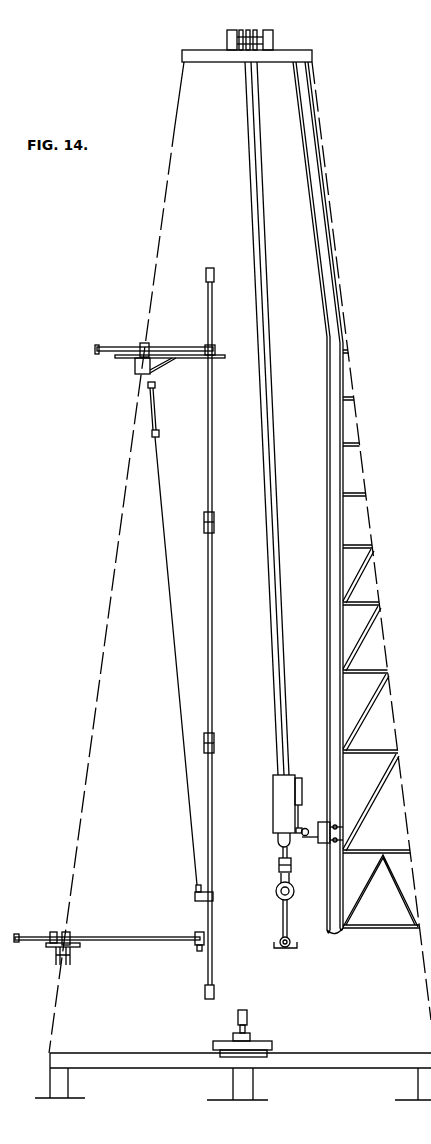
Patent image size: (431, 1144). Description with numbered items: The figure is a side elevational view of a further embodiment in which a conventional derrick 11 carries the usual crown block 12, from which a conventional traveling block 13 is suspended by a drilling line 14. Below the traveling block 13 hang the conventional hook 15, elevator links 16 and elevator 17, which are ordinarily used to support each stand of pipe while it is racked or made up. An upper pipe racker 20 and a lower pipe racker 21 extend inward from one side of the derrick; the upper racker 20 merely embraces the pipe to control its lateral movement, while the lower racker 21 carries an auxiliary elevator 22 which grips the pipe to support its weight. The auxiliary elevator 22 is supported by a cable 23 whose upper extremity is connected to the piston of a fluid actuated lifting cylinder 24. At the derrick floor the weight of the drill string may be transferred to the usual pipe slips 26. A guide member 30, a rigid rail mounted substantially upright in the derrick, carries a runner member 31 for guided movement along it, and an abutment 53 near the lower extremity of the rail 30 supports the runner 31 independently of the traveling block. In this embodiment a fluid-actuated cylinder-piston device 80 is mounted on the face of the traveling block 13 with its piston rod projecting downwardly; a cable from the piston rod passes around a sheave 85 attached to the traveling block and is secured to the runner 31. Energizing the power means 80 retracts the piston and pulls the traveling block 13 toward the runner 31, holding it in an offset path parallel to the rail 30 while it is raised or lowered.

The derrick 11 is at (116, 557).
The crown block 12 is at (253, 30).
The traveling block 13 is at (282, 793).
The drilling line 14 is at (250, 172).
The hook 15 is at (277, 891).
The elevator links 16 is at (290, 926).
The elevator 17 is at (275, 947).
The upper pipe racker 20 is at (191, 348).
The lower pipe racker 21 is at (135, 937).
The auxiliary elevator 22 is at (195, 897).
The cable 23 is at (167, 552).
The fluid actuated lifting cylinder 24 is at (156, 426).
The pipe slips 26 is at (248, 1040).
The guide member 30 is at (318, 187).
The runner member 31 is at (323, 822).
The abutment 53 is at (331, 929).
The fluid-actuated cylinder-piston device 80 is at (302, 787).
The sheave 85 is at (304, 837).